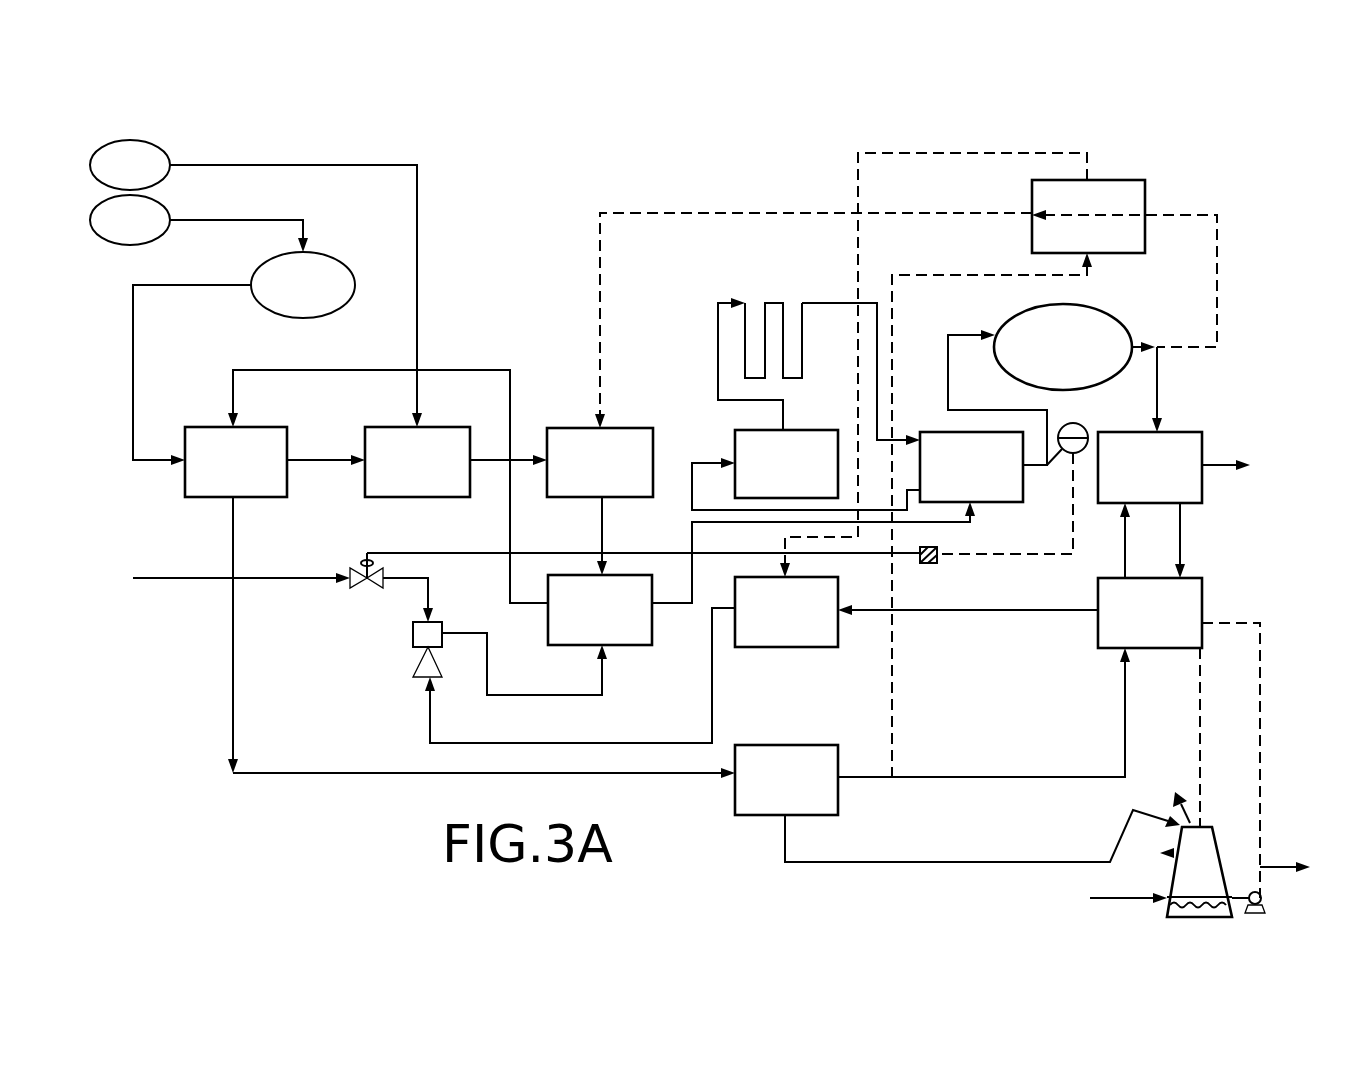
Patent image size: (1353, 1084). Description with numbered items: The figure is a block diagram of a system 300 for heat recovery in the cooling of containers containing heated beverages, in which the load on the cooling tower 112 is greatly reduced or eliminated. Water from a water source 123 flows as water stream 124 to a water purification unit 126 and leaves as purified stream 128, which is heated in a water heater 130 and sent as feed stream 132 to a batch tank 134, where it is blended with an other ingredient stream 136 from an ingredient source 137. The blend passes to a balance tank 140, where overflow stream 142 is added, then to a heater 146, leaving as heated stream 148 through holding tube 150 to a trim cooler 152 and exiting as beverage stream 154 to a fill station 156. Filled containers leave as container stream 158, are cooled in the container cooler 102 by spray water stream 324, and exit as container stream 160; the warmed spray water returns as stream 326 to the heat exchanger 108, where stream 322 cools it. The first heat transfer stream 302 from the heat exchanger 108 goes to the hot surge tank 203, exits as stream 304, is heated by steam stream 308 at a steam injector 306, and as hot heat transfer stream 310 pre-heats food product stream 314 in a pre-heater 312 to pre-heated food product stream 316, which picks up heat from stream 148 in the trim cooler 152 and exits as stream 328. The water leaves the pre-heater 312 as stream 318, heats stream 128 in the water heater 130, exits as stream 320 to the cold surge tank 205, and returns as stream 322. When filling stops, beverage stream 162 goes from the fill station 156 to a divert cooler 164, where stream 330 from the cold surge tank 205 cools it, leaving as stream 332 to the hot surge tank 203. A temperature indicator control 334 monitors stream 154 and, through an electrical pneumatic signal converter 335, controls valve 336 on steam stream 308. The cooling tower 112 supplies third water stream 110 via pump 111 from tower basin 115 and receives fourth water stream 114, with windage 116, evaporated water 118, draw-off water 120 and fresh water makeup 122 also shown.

The system 300 is at (725, 100).
The container cooler 102 is at (1130, 484).
The heat exchanger 108 is at (1130, 629).
The third water stream 110 is at (1262, 738).
The pump 111 is at (1265, 906).
The cooling tower 112 is at (1185, 886).
The fourth water stream 114 is at (1200, 722).
The tower basin 115 is at (1175, 917).
The windage 116 is at (1148, 848).
The evaporated water 118 is at (1173, 792).
The draw-off water 120 is at (1272, 867).
The fresh water makeup 122 is at (1103, 898).
The water source 123 is at (130, 220).
The water stream 124 is at (226, 220).
The water purification unit 126 is at (283, 303).
The purified stream 128 is at (134, 318).
The water heater 130 is at (216, 477).
The feed stream 132 is at (322, 465).
The batch tank 134 is at (397, 477).
The other ingredient stream 136 is at (347, 165).
The ingredient source 137 is at (130, 165).
The balance tank 140 is at (580, 477).
The overflow stream 142 is at (600, 228).
The heater 146 is at (767, 479).
The heated beverage stream 148 is at (718, 312).
The holding tube 150 is at (802, 378).
The trim cooler 152 is at (952, 484).
The beverage stream 154 is at (962, 335).
The fill station 156 is at (1043, 366).
The hot beverage filled container stream 158 is at (1157, 375).
The beverage filled container stream 160 is at (1222, 465).
The beverage stream 162 is at (1217, 287).
The divert cooler 164 is at (1068, 234).
The hot surge tank 203 is at (767, 629).
The cold surge tank 205 is at (767, 797).
The first heat transfer stream 302 is at (1078, 612).
The heat transfer stream 304 is at (712, 660).
The steam injector 306 is at (413, 642).
The steam stream 308 is at (165, 578).
The hot heat transfer stream 310 is at (487, 696).
The pre-heater 312 is at (580, 627).
The food product stream 314 is at (600, 542).
The pre-heated food product stream 316 is at (680, 607).
The heat transfer stream 318 is at (478, 368).
The heat transfer stream 320 is at (233, 748).
The heat transfer stream 322 is at (1043, 785).
The heat transfer stream 324 is at (1120, 543).
The heat transfer stream 326 is at (1180, 547).
The fluid line 328 is at (692, 462).
The heat transfer stream 330 is at (892, 705).
The heat transfer stream 332 is at (940, 153).
The temperature indicator control 334 is at (1083, 424).
The electrical pneumatic signal converter 335 is at (940, 550).
The valve 336 is at (357, 586).